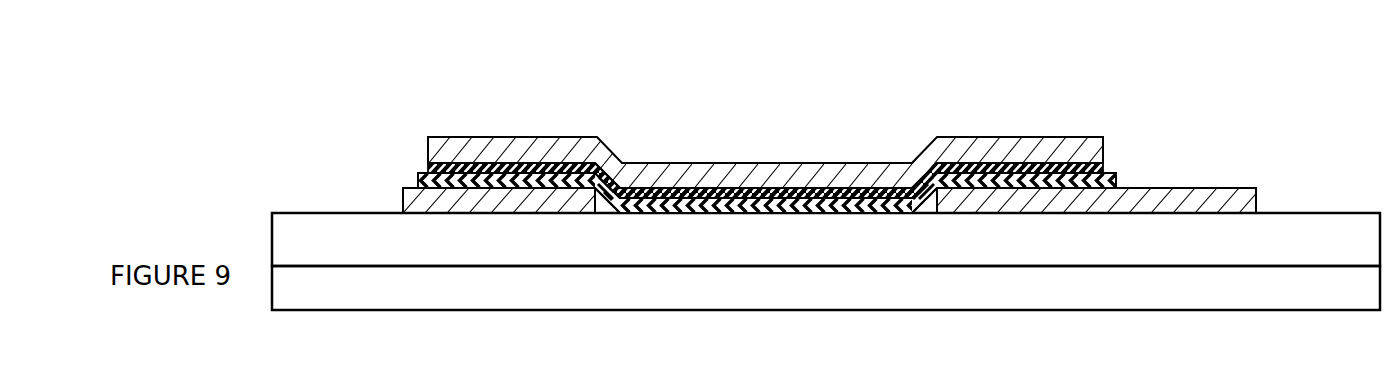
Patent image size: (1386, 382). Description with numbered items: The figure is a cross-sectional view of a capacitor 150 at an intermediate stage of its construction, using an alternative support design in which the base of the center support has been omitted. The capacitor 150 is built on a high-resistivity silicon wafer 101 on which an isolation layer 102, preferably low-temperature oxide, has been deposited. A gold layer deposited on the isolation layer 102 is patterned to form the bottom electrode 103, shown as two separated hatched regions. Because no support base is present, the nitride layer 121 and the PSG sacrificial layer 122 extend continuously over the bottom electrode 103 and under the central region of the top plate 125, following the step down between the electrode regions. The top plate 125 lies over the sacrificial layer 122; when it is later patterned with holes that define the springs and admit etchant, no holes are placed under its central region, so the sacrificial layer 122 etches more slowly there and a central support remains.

The capacitor 150 is at (213, 72).
The high-resistivity silicon wafer 101 is at (873, 306).
The isolation layer 102 is at (873, 258).
The bottom electrode 103 is at (505, 203).
The nitride layer 121 is at (1116, 183).
The sacrificial layer 122 is at (1104, 169).
The top plate 125 is at (978, 138).